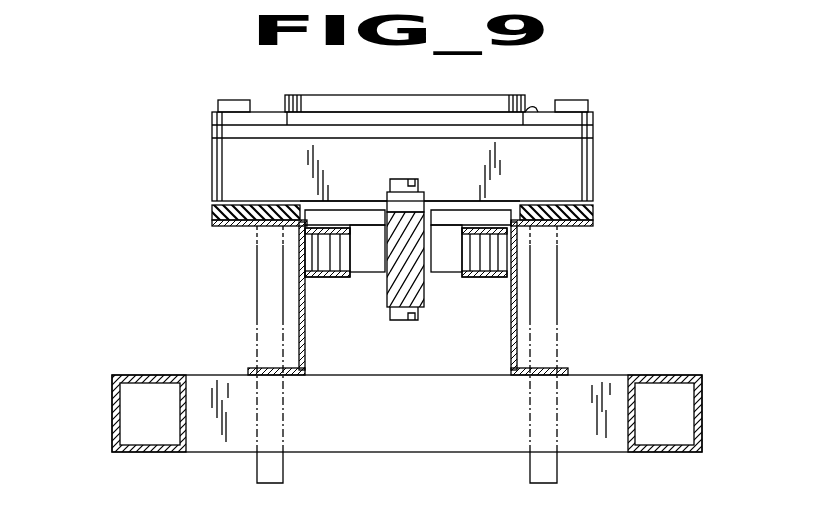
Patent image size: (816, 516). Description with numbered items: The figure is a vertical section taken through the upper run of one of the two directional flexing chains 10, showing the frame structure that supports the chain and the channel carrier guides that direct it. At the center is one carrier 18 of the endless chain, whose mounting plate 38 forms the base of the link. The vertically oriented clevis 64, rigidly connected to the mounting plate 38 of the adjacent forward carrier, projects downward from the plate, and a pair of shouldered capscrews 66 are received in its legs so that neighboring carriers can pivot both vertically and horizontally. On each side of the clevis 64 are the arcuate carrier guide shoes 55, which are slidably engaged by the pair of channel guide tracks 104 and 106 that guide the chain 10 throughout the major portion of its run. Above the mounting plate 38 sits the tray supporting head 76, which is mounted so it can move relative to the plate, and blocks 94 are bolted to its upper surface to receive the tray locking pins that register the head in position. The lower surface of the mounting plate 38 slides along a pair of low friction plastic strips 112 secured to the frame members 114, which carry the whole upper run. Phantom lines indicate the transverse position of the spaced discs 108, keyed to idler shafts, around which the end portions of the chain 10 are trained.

The two directional flexing chain 10 is at (144, 184).
The carrier 18 is at (190, 142).
The mounting plate 38 is at (596, 206).
The arcuate carrier guide shoes 55 is at (312, 252).
The vertically oriented clevis 64 is at (438, 196).
The shouldered capscrews 66 is at (404, 182).
The tray supporting head 76 is at (542, 100).
The blocks 94 is at (227, 100).
The channel guide track 104 is at (338, 280).
The channel guide track 106 is at (482, 282).
The spaced discs 108 is at (255, 293).
The low friction plastic strips 112 is at (212, 212).
The frame members 114 is at (212, 226).